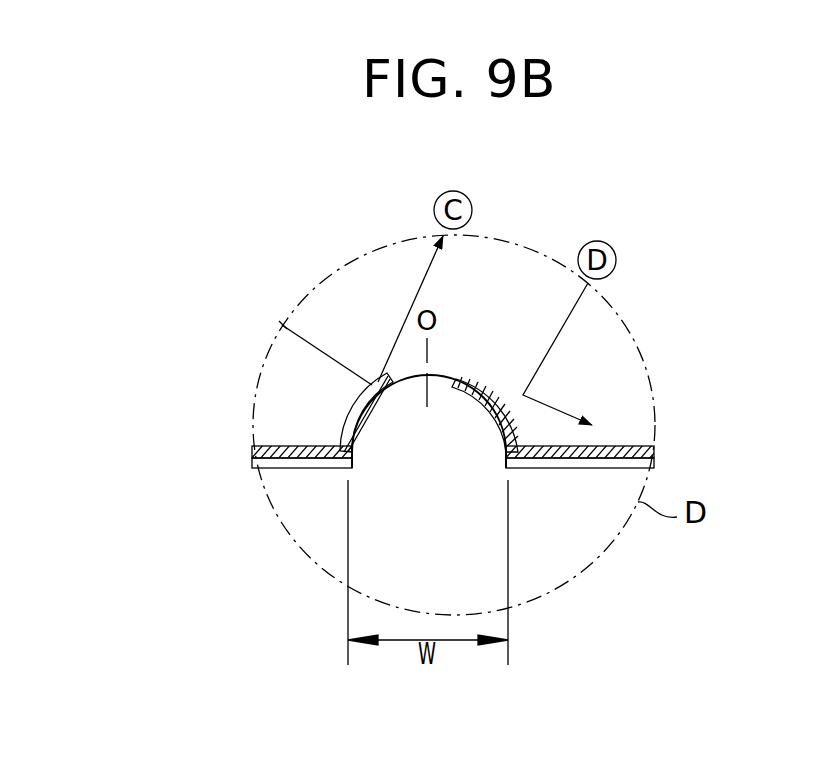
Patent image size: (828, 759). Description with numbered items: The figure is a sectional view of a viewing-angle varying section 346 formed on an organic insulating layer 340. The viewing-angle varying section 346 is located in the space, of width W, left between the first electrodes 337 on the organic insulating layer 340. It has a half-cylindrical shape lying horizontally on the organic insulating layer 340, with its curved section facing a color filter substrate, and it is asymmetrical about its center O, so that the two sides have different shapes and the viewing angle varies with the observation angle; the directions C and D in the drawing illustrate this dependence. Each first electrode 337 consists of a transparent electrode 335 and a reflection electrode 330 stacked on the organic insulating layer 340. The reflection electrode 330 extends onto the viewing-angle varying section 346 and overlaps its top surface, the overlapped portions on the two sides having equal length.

The reflection electrode 330 is at (253, 450).
The transparent electrode 335 is at (253, 463).
The first electrode 337 is at (122, 420).
The organic insulating layer 340 is at (273, 510).
The viewing-angle varying section 346 is at (442, 432).